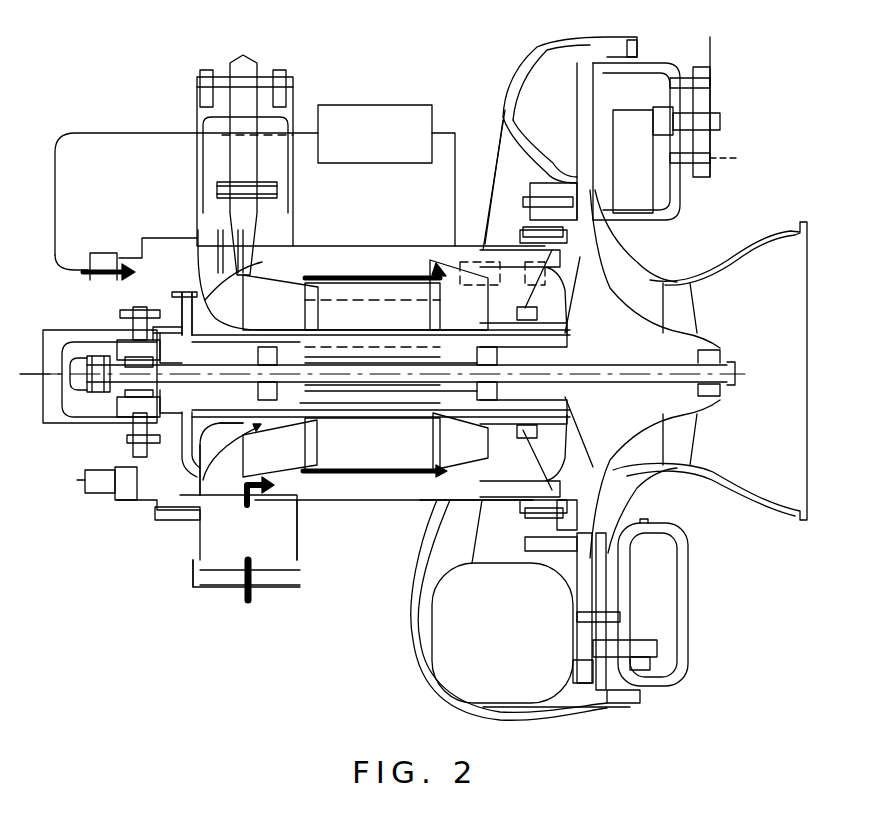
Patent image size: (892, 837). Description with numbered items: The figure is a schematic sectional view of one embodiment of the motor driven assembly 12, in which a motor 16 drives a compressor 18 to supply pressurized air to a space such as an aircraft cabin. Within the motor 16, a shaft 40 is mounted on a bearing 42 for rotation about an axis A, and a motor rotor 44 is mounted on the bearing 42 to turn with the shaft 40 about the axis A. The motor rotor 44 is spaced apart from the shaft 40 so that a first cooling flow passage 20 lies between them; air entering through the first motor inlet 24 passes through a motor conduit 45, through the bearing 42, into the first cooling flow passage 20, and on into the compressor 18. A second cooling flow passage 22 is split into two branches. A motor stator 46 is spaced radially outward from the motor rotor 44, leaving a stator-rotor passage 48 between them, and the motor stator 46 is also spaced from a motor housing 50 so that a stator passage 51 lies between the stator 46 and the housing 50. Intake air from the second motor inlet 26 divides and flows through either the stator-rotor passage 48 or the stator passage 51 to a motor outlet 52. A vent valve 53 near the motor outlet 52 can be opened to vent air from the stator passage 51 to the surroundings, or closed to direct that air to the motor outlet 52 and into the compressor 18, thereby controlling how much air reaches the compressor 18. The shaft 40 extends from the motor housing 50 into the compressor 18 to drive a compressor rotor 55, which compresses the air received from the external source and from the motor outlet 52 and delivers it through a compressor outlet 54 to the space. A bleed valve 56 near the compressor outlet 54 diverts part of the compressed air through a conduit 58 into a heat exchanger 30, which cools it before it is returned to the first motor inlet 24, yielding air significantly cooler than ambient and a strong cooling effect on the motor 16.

The motor driven assembly 12 is at (100, 643).
The motor 16 is at (262, 272).
The compressor 18 is at (712, 474).
The first cooling flow passage 20 is at (357, 337).
The second cooling flow passage 22 is at (243, 505).
The first motor inlet 24 is at (110, 252).
The second motor inlet 26 is at (197, 577).
The heat exchanger 30 is at (380, 105).
The shaft 40 is at (117, 387).
The bearing 42 is at (187, 497).
The motor rotor 44 is at (410, 407).
The motor conduit 45 is at (160, 290).
The motor stator 46 is at (297, 280).
The stator-rotor passage 48 is at (348, 420).
The motor housing 50 is at (340, 493).
The stator passage 51 is at (413, 420).
The motor outlet 52 is at (462, 276).
The vent valve 53 is at (453, 527).
The compressor outlet 54 is at (522, 68).
The compressor rotor 55 is at (620, 470).
The bleed valve 56 is at (600, 272).
The conduit 58 is at (458, 153).
The axis A is at (27, 378).